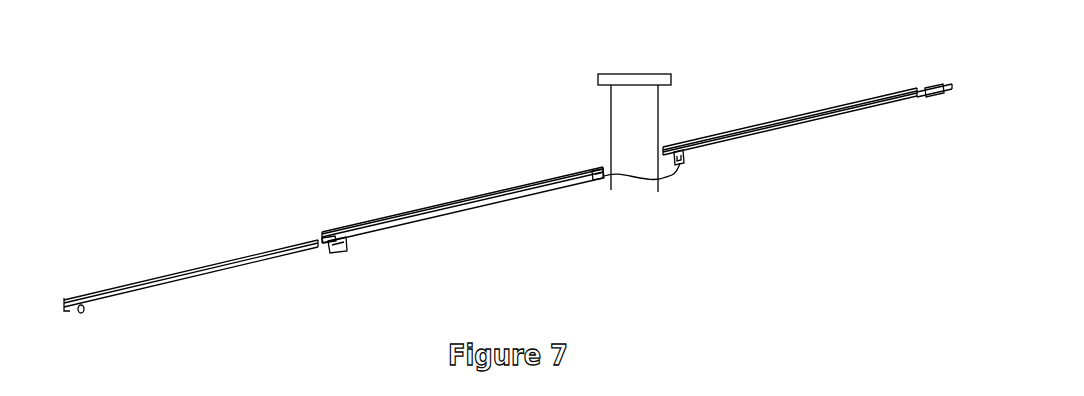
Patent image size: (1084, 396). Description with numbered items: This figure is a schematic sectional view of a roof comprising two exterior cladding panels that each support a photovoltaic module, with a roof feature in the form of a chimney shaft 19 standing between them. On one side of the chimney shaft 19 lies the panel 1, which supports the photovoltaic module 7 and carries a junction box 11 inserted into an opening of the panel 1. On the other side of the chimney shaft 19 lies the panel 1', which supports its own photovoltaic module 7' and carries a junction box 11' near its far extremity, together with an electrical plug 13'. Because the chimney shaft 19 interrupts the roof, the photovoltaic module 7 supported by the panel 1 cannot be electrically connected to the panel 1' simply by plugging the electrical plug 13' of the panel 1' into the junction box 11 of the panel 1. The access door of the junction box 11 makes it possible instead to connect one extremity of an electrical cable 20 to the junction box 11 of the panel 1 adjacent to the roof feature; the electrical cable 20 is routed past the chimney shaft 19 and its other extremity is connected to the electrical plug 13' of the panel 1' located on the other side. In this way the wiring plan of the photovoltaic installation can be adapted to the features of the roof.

The panel 1 is at (333, 242).
The photovoltaic module 7 is at (462, 205).
The junction box 11 is at (590, 200).
The chimney shaft 19 is at (611, 110).
The electrical cable 20 is at (677, 181).
The electrical plug 13' is at (711, 171).
The panel 1' is at (807, 125).
The photovoltaic module 7' is at (790, 110).
The junction box 11' is at (926, 120).